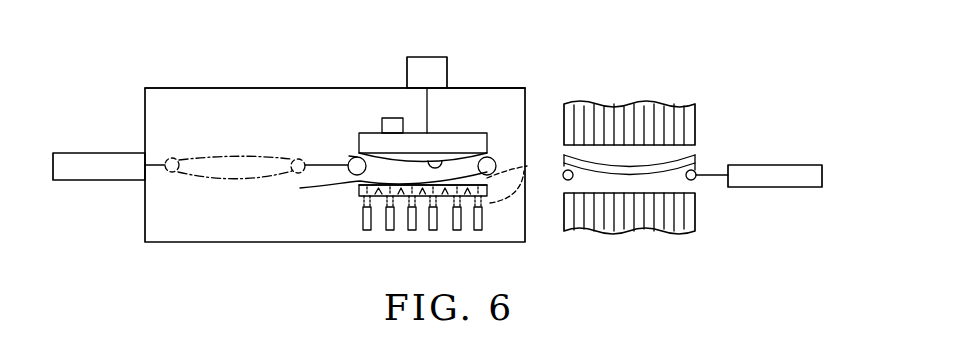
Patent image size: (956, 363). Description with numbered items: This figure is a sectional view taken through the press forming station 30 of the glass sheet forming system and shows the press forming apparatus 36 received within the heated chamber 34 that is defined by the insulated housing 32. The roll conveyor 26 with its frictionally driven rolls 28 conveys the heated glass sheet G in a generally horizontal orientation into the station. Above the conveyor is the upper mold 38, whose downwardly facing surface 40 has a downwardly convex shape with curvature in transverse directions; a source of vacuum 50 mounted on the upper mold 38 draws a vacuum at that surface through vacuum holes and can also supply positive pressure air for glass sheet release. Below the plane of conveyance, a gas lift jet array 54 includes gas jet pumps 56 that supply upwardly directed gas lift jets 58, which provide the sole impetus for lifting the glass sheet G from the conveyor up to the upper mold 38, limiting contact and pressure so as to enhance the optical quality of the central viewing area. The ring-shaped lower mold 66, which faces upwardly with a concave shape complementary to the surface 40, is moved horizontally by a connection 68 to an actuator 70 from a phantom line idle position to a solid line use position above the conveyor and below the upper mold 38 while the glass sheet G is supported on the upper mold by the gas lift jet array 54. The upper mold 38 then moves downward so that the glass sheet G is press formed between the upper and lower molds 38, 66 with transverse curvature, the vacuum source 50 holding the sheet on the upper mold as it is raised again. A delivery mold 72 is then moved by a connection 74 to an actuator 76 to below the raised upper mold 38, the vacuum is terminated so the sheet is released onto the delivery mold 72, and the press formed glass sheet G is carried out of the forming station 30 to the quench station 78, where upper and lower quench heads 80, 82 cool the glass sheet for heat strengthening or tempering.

The conveyor 26 is at (353, 197).
The rolls 28 is at (351, 191).
The press forming station 30 is at (519, 88).
The insulated housing 32 is at (484, 88).
The heated chamber 34 is at (295, 88).
The press forming apparatus 36 is at (185, 113).
The upper mold 38 is at (480, 132).
The downwardly facing surface 40 is at (445, 161).
The source of vacuum 50 is at (390, 118).
The gas lift jet array 54 is at (490, 217).
The gas jet pumps 56 is at (456, 232).
The gas lift jets 58 is at (529, 165).
The lower mold 66 is at (300, 188).
The connection 68 is at (165, 165).
The actuator 70 is at (102, 181).
The delivery mold 72 is at (700, 161).
The connection 74 is at (712, 178).
The actuator 76 is at (776, 165).
The quench station 78 is at (655, 173).
The upper quench head 80 is at (626, 103).
The lower quench head 82 is at (630, 236).
The glass sheet G is at (351, 156).